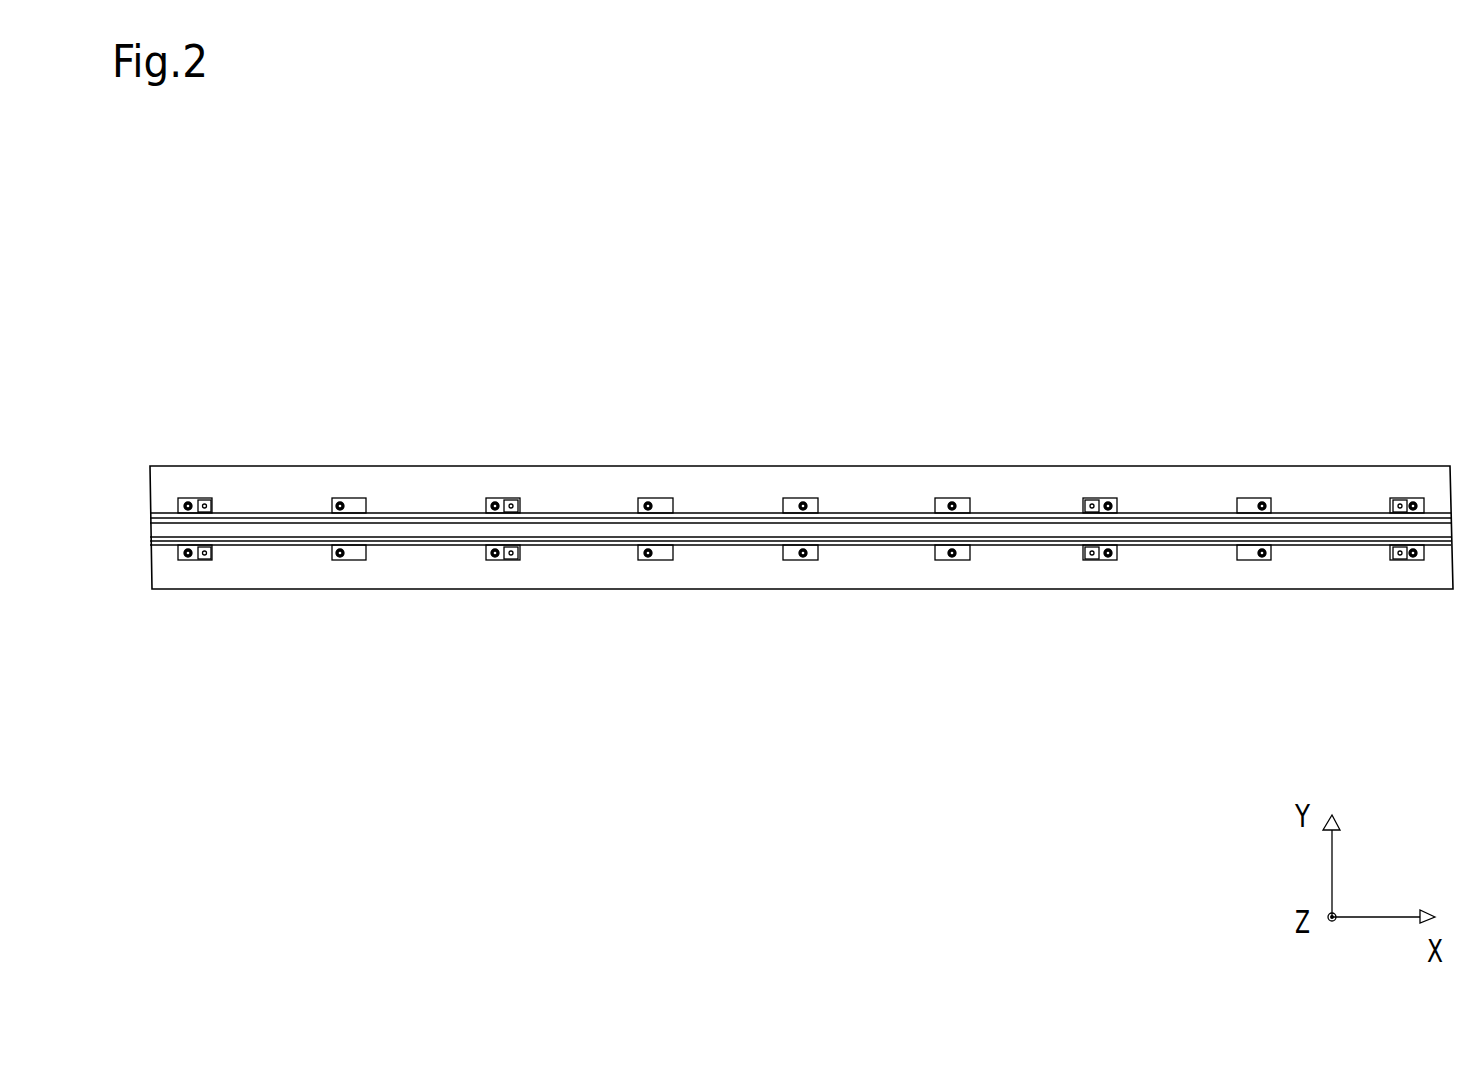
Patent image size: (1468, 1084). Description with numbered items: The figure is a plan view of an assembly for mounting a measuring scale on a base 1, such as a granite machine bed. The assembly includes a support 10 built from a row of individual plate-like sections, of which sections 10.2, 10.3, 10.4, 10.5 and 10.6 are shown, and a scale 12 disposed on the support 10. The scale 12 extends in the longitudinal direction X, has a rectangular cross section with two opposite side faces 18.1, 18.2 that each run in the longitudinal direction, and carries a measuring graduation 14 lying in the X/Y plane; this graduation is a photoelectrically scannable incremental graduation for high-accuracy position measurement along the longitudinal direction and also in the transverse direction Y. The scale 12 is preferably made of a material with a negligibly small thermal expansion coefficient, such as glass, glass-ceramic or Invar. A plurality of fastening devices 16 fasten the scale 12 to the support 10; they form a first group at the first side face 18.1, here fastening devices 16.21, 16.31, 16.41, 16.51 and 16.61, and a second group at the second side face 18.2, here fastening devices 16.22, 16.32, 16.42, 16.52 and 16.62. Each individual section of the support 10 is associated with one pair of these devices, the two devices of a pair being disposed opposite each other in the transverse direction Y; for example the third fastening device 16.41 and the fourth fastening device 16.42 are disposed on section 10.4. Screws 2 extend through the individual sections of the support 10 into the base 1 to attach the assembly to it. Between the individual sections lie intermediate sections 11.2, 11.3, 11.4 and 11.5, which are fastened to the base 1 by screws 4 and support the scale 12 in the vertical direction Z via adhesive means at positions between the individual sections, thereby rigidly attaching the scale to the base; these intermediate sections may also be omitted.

The base 1 is at (801, 457).
The screws 2 is at (137, 636).
The screws 4 is at (323, 406).
The support 10 is at (187, 669).
The individual section of support 10.2 is at (253, 671).
The individual section of support 10.3 is at (495, 660).
The individual section of support 10.4 is at (793, 663).
The individual section of support 10.5 is at (1095, 661).
The individual section of support 10.6 is at (1405, 661).
The intermediate section 11.2 is at (381, 668).
The intermediate section 11.3 is at (651, 647).
The intermediate section 11.4 is at (938, 647).
The intermediate section 11.5 is at (1271, 642).
The scale 12 is at (800, 422).
The measuring graduation 14 is at (800, 436).
The fastening devices 16 is at (150, 418).
The fastening device 16.21 is at (260, 628).
The fastening device 16.22 is at (197, 385).
The fastening device 16.31 is at (544, 628).
The fastening device 16.32 is at (505, 385).
The third fastening device 16.41 is at (841, 627).
The fourth fastening device 16.42 is at (797, 388).
The fastening device 16.51 is at (1053, 618).
The fastening device 16.52 is at (1075, 385).
The fastening device 16.61 is at (1357, 629).
The fastening device 16.62 is at (1385, 385).
The first side face 18.1 is at (800, 675).
The second side face 18.2 is at (800, 367).